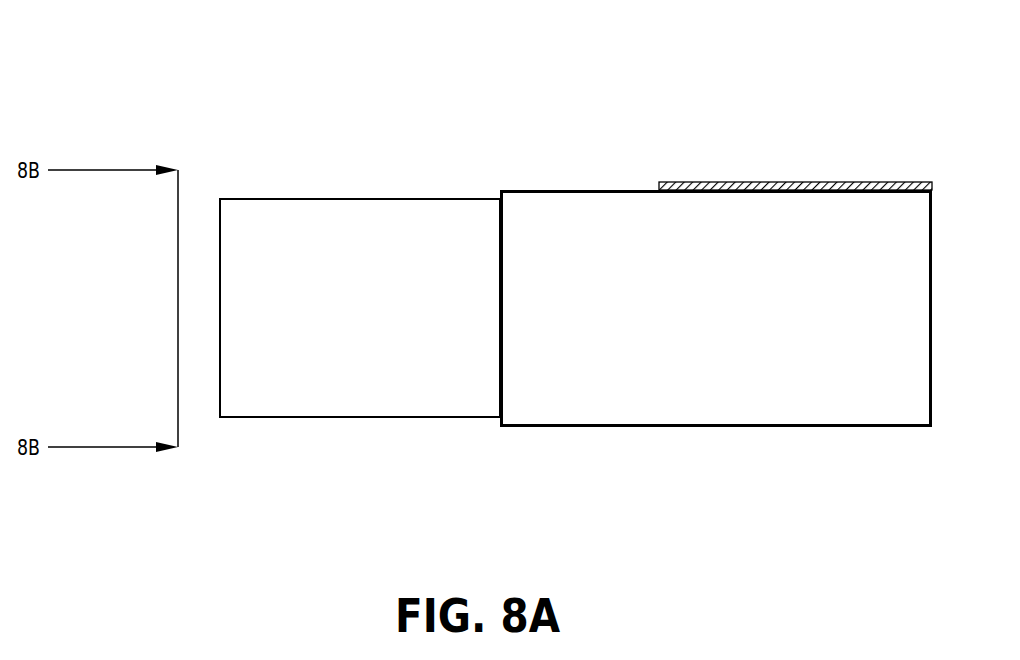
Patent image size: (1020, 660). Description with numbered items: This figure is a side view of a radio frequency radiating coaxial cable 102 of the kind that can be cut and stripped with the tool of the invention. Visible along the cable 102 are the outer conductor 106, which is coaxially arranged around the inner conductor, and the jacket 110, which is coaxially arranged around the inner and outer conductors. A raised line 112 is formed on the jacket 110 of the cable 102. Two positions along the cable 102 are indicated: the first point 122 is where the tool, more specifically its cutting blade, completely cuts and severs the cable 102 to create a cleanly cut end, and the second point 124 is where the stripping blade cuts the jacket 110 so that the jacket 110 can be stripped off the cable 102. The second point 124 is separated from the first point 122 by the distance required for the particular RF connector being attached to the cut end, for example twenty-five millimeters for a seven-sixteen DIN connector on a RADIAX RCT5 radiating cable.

The radio frequency (RF) radiating coaxial cable 102 is at (497, 34).
The outer conductor 106 is at (325, 199).
The jacket 110 is at (598, 428).
The raised line 112 is at (680, 182).
The first point 122 is at (231, 166).
The second point 124 is at (504, 160).